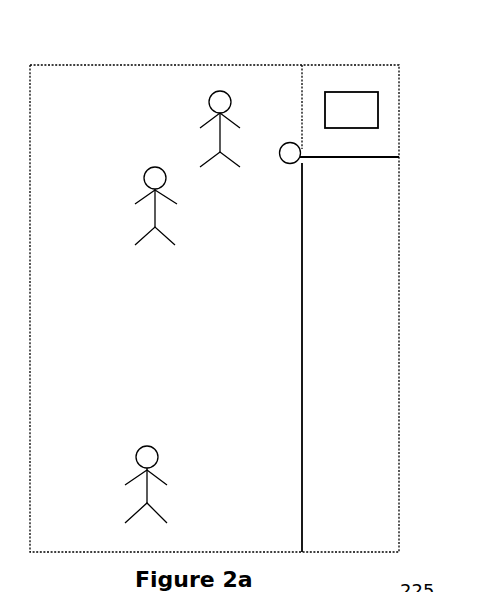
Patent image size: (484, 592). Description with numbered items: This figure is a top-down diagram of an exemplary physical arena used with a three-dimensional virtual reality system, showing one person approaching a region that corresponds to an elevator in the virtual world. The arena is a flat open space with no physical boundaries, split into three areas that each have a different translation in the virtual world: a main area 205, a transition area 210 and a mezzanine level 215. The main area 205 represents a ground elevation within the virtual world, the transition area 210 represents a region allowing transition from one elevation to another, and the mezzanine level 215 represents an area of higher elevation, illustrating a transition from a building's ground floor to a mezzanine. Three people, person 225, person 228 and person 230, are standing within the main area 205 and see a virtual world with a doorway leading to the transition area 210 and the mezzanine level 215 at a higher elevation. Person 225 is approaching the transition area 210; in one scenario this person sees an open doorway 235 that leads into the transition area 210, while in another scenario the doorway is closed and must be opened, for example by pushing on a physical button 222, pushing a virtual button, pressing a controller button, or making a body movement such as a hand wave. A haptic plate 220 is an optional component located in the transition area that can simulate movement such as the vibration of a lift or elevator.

The main area 205 is at (172, 370).
The transition area 210 is at (385, 148).
The mezzanine level 215 is at (375, 360).
The haptic plate 220 is at (378, 98).
The physical button 222 is at (292, 163).
The person 225 is at (220, 92).
The person 228 is at (153, 168).
The person 230 is at (158, 455).
The open doorway 235 is at (308, 83).